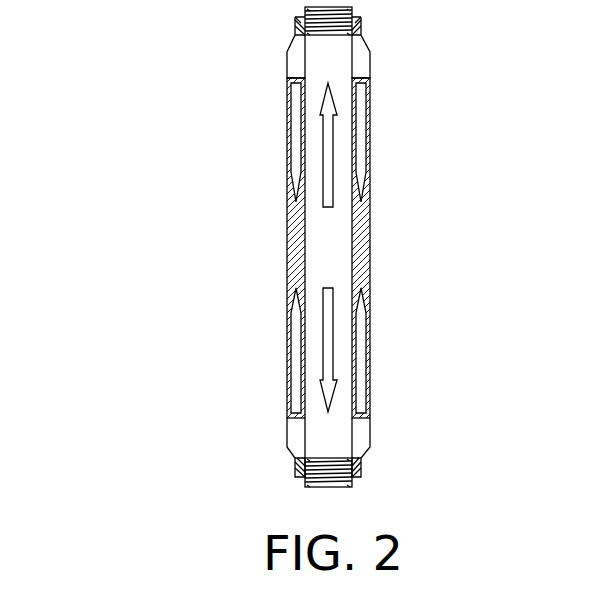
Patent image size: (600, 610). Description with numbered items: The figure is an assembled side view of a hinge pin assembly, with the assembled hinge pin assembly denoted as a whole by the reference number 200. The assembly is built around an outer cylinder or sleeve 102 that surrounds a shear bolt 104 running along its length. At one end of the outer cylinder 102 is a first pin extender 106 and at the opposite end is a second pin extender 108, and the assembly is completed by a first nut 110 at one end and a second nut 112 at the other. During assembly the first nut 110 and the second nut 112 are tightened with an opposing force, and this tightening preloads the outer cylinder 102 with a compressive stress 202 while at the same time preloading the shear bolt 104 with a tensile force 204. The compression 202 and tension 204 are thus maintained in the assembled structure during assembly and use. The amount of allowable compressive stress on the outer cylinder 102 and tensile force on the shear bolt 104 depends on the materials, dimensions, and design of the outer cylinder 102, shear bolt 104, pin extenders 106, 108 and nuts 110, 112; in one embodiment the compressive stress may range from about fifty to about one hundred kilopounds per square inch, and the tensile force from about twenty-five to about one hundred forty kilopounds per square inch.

The assembled hinge pin assembly 200 is at (155, 128).
The second pin extender 108 is at (287, 66).
The second nut 112 is at (360, 28).
The outer cylinder 102 is at (287, 243).
The shear bolt 104 is at (370, 232).
The compressive stress 202 is at (292, 349).
The tensile force 204 is at (333, 295).
The first pin extender 106 is at (370, 430).
The first nut 110 is at (297, 467).